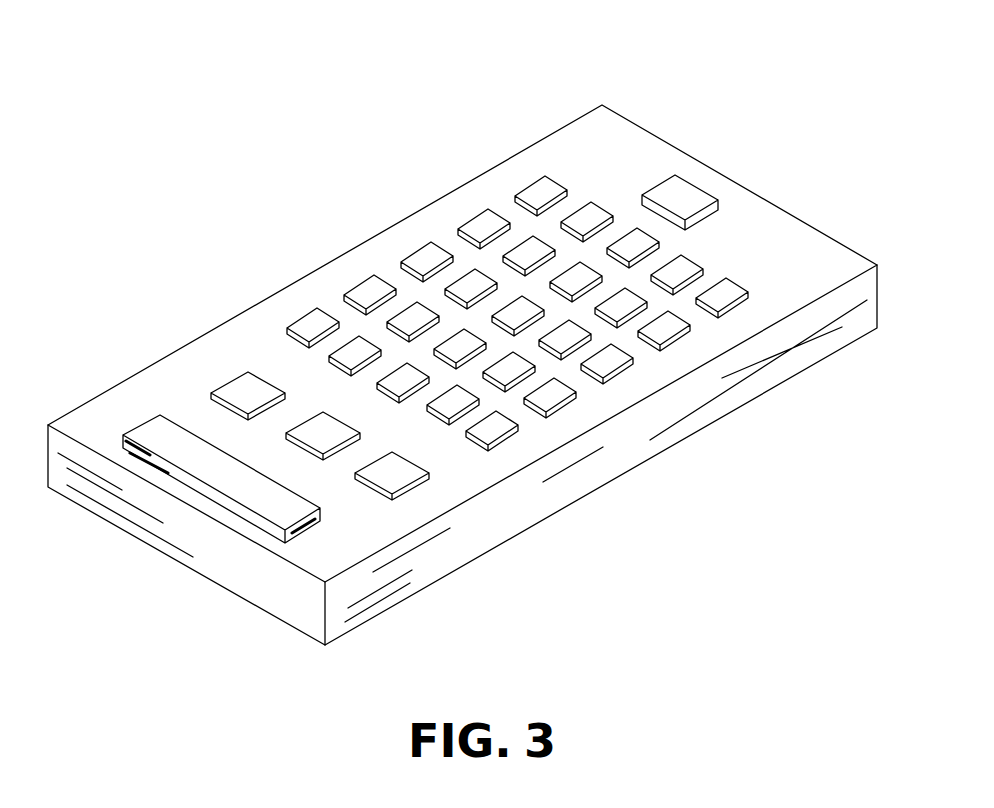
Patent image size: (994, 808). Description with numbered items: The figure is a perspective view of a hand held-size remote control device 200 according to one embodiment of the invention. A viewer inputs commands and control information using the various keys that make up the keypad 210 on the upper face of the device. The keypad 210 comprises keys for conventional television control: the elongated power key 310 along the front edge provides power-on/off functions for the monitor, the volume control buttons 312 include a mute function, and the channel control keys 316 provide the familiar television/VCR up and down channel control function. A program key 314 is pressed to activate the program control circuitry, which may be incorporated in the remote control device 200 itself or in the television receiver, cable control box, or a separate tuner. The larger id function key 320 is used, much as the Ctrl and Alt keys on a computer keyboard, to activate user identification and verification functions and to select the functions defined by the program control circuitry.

The keypad 210 is at (434, 100).
The remote control device 200 is at (770, 375).
The power key 310 is at (268, 504).
The volume control buttons 312 is at (370, 487).
The program key 314 is at (312, 320).
The channel control keys 316 is at (430, 418).
The id function key 320 is at (697, 187).